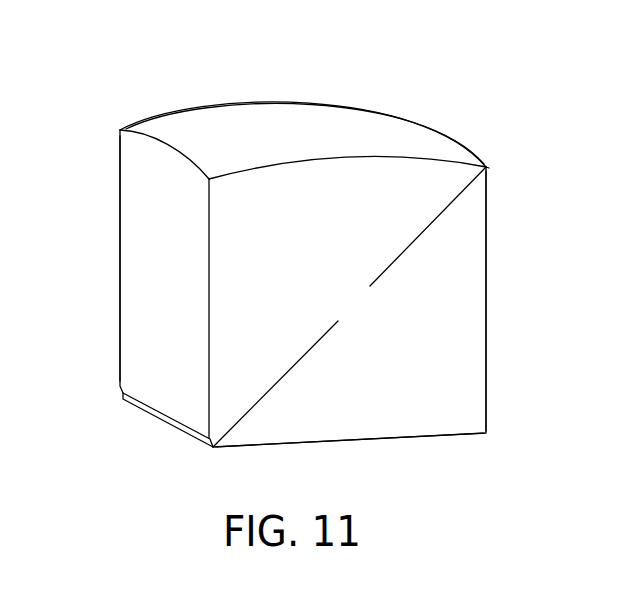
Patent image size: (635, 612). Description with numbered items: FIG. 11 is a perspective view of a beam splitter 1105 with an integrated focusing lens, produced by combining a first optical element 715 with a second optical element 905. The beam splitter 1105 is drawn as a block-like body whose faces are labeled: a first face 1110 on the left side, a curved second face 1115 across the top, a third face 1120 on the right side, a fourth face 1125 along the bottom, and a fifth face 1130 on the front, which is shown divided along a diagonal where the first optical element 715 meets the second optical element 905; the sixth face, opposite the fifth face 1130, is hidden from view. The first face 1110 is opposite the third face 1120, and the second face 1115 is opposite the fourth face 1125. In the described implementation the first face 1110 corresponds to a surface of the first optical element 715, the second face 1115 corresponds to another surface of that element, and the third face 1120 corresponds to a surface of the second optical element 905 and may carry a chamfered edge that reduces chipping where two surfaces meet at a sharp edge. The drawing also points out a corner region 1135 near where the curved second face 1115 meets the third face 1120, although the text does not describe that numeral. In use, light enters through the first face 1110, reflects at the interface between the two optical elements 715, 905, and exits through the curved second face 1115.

The beam splitter 1105 is at (104, 95).
The first face 1110 is at (94, 205).
The second face 1115 is at (240, 103).
The third face 1120 is at (494, 242).
The fourth face 1125 is at (350, 446).
The fifth face 1130 is at (380, 316).
The corner 1135 is at (494, 164).
The first optical element 715 is at (307, 256).
The second optical element 905 is at (436, 383).